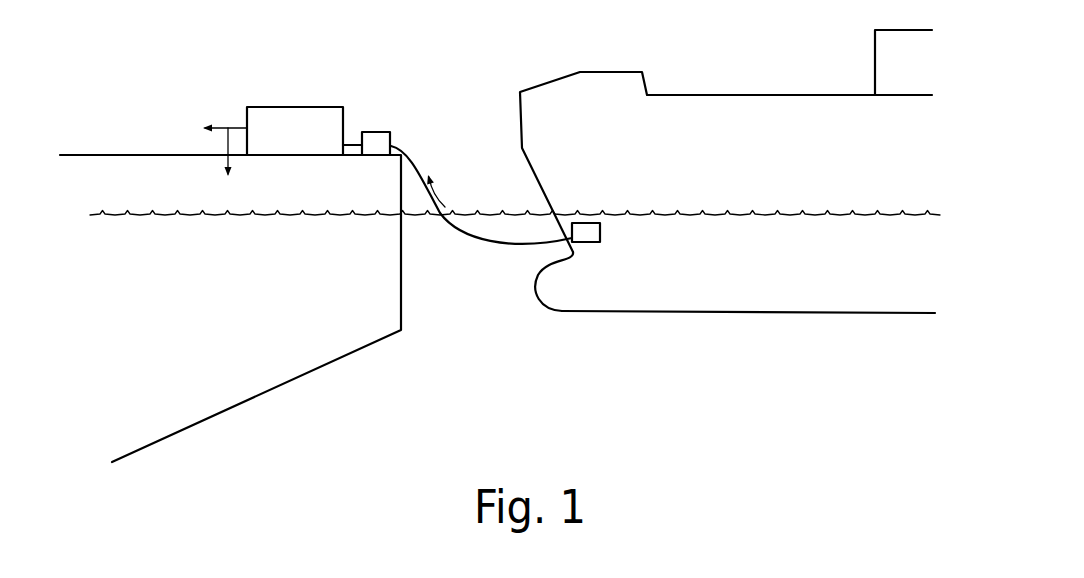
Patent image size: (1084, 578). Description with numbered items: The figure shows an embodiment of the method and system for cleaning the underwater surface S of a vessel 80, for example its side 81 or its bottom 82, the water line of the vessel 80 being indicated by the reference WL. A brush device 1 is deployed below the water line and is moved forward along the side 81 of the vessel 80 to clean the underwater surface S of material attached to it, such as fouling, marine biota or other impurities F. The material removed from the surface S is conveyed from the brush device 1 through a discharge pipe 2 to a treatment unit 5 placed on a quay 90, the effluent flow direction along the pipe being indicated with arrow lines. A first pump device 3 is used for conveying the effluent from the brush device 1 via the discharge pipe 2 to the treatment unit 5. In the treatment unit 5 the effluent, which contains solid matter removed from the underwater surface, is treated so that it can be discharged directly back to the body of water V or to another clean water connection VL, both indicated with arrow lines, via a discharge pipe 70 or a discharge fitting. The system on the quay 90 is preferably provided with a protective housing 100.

The brush device 1 is at (593, 219).
The discharge pipe 2 is at (486, 247).
The first pump device 3 is at (378, 129).
The treatment unit 5 is at (319, 104).
The discharge pipe 70 is at (208, 105).
The vessel 80 is at (727, 201).
The side 81 is at (823, 276).
The bottom 82 is at (700, 320).
The quay 90 is at (117, 150).
The protective housing 100 is at (329, 89).
The clean water connection VL is at (182, 128).
The water line WL is at (765, 209).
The body of water V is at (240, 265).
The underwater surface S is at (896, 272).
The impurities F is at (621, 256).